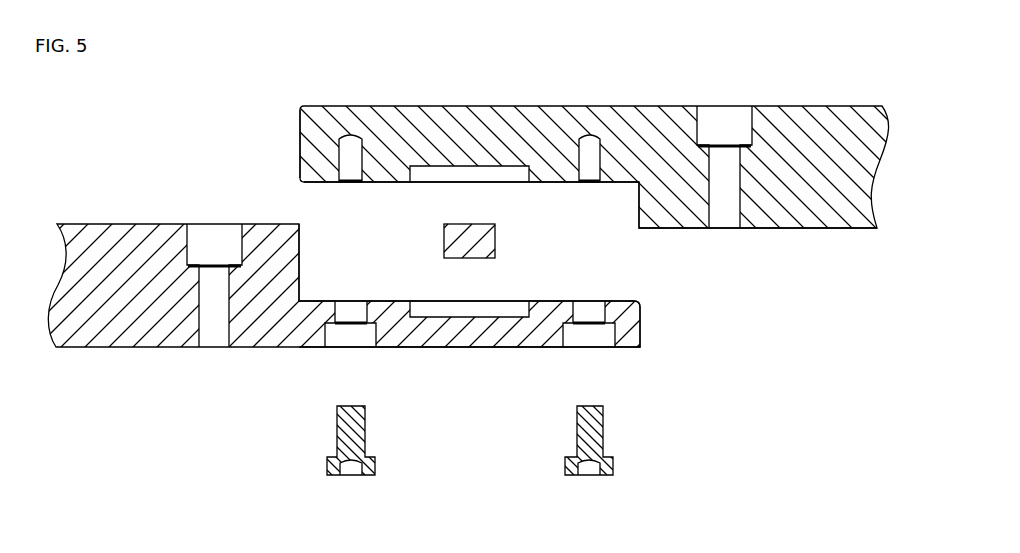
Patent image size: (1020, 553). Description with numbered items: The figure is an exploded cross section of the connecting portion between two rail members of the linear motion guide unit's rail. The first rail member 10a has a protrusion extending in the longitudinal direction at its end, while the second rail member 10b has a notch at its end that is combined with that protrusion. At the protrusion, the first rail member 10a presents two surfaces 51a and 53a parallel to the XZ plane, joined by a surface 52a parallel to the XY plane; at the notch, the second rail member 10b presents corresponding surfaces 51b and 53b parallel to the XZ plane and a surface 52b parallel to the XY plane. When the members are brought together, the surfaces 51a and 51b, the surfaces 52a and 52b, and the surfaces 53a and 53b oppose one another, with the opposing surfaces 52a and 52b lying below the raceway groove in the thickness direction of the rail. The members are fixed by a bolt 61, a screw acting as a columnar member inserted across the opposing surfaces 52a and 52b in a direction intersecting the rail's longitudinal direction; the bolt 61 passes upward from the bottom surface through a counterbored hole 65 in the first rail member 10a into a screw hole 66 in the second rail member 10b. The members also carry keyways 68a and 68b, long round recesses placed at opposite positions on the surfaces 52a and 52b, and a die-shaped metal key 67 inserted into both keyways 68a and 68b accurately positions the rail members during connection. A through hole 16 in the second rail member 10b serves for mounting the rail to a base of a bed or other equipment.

The first rail member 10a is at (139, 298).
The second rail member 10b is at (831, 184).
The through hole 16 is at (723, 120).
The surface 51a is at (300, 240).
The surface 51b is at (300, 146).
The surface 52a is at (545, 300).
The surface 52b is at (556, 181).
The surface 53a is at (646, 323).
The surface 53b is at (638, 212).
The bolt 61 is at (338, 476).
The counterbored hole 65 is at (333, 338).
The screw hole 66 is at (358, 158).
The key 67 is at (480, 242).
The keyway 68a is at (472, 310).
The keyway 68b is at (470, 172).